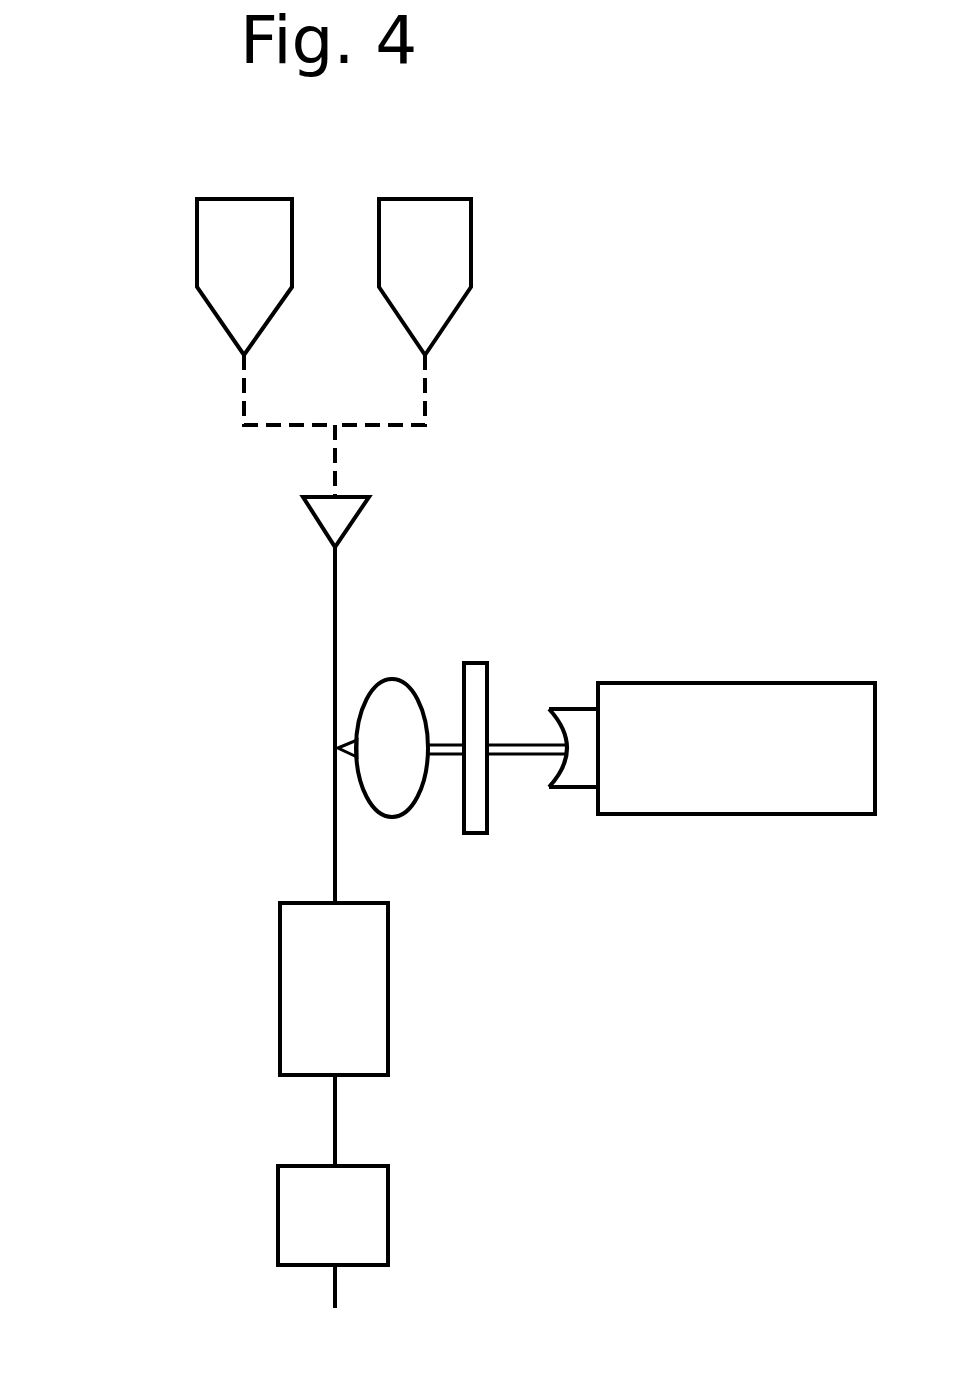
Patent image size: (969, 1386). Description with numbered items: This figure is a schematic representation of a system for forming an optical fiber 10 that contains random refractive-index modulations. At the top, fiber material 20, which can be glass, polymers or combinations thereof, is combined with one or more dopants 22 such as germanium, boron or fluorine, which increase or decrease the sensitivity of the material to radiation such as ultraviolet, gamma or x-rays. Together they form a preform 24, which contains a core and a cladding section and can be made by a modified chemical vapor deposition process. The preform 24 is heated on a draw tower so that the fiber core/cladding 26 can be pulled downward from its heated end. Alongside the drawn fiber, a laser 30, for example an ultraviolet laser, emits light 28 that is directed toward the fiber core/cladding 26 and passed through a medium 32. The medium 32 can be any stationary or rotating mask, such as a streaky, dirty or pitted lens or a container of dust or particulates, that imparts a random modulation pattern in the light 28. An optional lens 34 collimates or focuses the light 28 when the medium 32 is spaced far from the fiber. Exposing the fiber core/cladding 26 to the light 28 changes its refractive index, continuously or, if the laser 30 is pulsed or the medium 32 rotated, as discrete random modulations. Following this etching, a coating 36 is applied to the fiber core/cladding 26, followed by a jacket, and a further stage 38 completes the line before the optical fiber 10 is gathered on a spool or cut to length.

The optical fiber 10 is at (335, 1285).
The fiber material 20 is at (197, 224).
The dopants 22 is at (471, 225).
The preform 24 is at (318, 527).
The fiber core/cladding 26 is at (335, 622).
The light 28 is at (520, 757).
The laser 30 is at (765, 815).
The medium 32 is at (475, 834).
The lens 34 is at (392, 818).
The coating 36 is at (280, 968).
The output unit 38 is at (278, 1203).